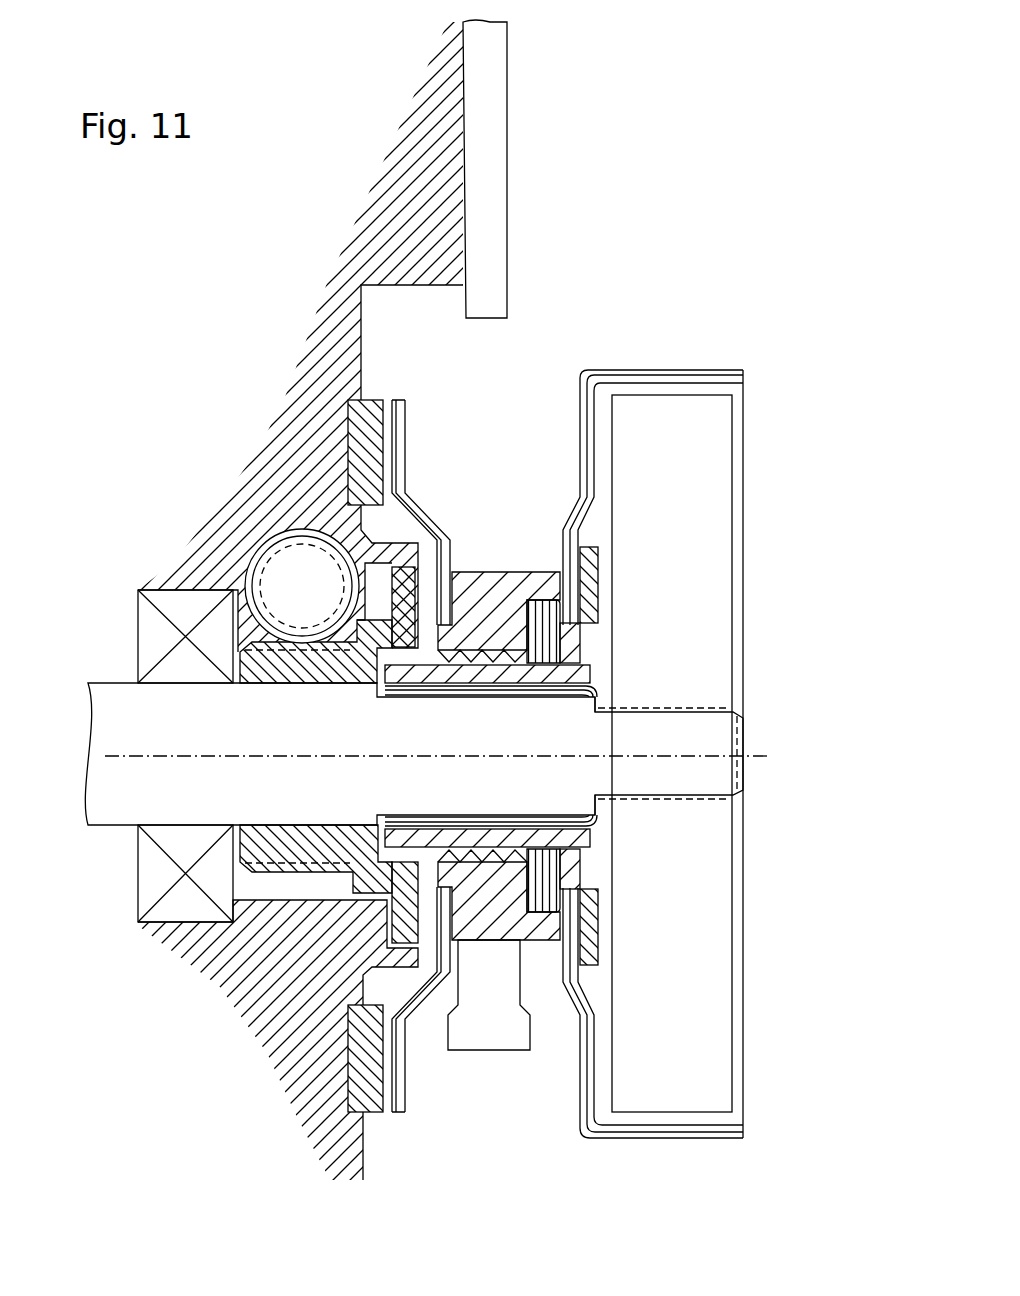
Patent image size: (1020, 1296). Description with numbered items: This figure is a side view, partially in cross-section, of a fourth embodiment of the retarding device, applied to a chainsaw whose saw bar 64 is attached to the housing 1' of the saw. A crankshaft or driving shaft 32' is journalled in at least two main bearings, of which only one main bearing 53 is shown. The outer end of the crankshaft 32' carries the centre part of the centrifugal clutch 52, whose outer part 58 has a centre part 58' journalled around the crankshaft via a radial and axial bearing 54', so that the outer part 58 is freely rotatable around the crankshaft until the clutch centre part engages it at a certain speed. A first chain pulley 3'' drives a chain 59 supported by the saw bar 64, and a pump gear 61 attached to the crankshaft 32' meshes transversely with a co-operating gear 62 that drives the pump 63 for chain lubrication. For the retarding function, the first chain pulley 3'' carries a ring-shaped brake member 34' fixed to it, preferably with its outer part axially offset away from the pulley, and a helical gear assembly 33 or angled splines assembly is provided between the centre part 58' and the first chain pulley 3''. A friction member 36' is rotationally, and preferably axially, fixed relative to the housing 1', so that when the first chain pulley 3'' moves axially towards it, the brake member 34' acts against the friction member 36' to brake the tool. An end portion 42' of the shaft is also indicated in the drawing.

The housing 1' is at (300, 601).
The saw bar 64 is at (497, 150).
The friction member 36' is at (400, 721).
The brake member 34' is at (441, 754).
The main bearing 53 is at (170, 635).
The pump gear 61 is at (282, 670).
The co-operating gear 62 is at (255, 577).
The pump 63 is at (302, 563).
The crankshaft 32' is at (407, 778).
The first chain pulley 3'' is at (509, 733).
The helical gear assembly 33 is at (527, 862).
The radial and axial bearing 54' is at (610, 721).
The centre part 58' is at (698, 724).
The outer part 58 is at (689, 724).
The centrifugal clutch 52 is at (762, 440).
The shaft end portion 42' is at (710, 779).
The chain 59 is at (482, 1033).